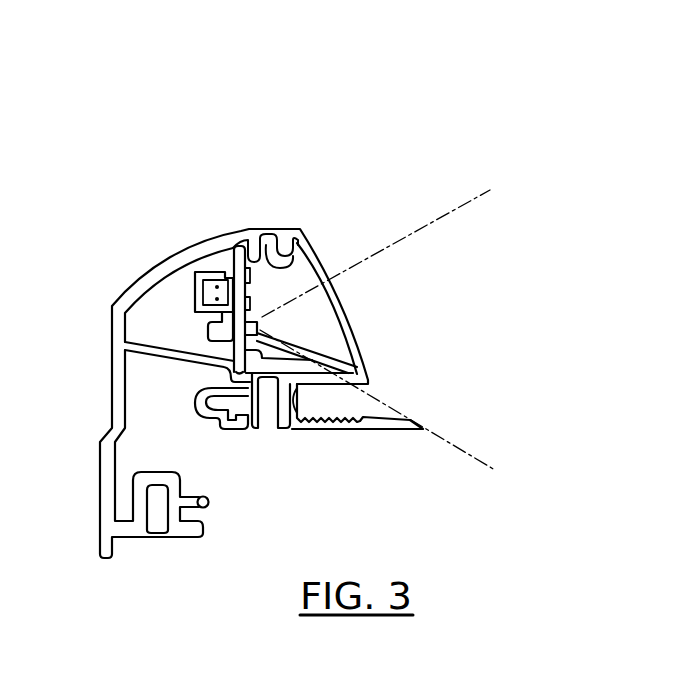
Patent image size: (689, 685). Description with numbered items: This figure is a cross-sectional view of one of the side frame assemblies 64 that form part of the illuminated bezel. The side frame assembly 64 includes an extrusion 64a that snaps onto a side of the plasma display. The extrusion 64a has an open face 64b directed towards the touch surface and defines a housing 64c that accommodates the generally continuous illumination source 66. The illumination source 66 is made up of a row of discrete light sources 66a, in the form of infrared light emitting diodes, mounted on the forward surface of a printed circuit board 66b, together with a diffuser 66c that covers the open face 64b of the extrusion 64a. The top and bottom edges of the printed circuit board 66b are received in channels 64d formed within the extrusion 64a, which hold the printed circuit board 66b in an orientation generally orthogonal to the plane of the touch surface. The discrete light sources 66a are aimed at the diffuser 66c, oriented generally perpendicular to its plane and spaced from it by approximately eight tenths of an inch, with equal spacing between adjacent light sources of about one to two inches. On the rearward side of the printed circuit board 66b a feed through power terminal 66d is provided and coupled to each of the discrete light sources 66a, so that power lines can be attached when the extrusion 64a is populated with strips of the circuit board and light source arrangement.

The side frame assembly 64 is at (100, 196).
The extrusion 64a is at (107, 450).
The open face 64b is at (315, 322).
The housing 64c is at (185, 333).
The channels 64d is at (235, 246).
The generally continuous illumination source 66 is at (340, 241).
The discrete light sources 66a is at (358, 353).
The printed circuit board 66b is at (221, 253).
The diffuser 66c is at (337, 297).
The feed through power terminal 66d is at (200, 290).